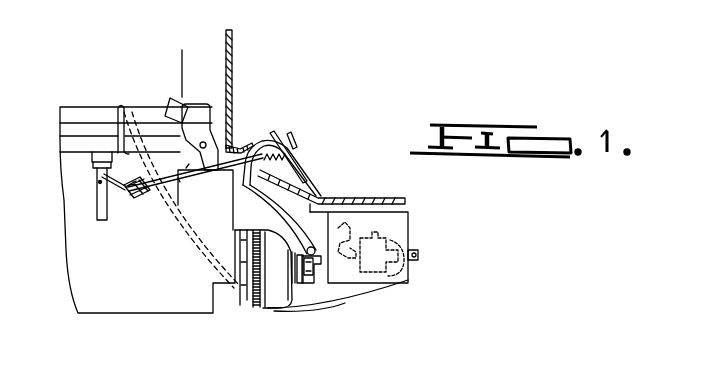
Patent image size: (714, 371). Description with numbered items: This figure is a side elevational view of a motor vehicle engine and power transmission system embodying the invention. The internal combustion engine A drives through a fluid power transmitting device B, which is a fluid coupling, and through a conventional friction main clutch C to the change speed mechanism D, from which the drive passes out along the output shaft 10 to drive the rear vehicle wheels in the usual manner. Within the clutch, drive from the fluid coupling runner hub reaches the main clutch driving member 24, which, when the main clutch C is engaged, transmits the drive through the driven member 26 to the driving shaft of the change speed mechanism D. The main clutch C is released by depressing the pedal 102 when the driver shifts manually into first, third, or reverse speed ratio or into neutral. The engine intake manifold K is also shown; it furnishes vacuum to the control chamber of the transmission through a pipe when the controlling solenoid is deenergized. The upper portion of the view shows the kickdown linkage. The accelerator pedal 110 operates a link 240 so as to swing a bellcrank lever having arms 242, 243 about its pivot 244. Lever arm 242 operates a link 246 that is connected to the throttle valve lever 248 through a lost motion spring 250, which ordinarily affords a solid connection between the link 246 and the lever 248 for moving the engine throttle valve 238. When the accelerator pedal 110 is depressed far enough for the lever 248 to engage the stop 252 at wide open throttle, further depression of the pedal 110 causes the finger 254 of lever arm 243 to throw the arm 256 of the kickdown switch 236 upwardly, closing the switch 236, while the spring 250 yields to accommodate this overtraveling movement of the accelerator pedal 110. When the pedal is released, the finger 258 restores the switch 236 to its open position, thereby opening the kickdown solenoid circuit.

The internal combustion engine A is at (72, 108).
The engine intake manifold K is at (97, 140).
The fluid power transmitting device B is at (263, 308).
The friction main clutch C is at (302, 277).
The change speed mechanism D is at (408, 222).
The output shaft 10 is at (418, 253).
The main clutch driving member 24 is at (295, 298).
The driven member 26 is at (305, 285).
The pedal 102 is at (298, 144).
The accelerator pedal 110 is at (305, 169).
The kickdown switch 236 is at (176, 64).
The engine throttle valve 238 is at (100, 168).
The link 240 is at (260, 140).
The lever arm of bellcrank lever 242 is at (188, 168).
The lever arm of bellcrank lever 243 is at (198, 120).
The pivot 244 is at (216, 148).
The link 246 is at (178, 180).
The throttle valve lever 248 is at (115, 193).
The lost motion spring 250 is at (146, 193).
The stop 252 is at (100, 183).
The finger 254 is at (186, 138).
The arm of switch 256 is at (190, 108).
The finger 258 is at (184, 110).